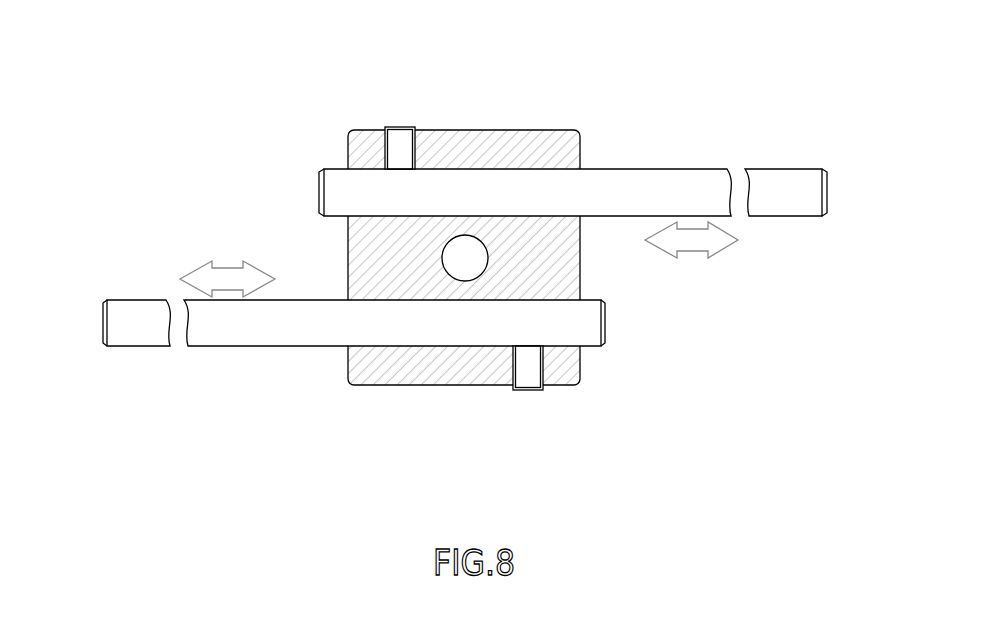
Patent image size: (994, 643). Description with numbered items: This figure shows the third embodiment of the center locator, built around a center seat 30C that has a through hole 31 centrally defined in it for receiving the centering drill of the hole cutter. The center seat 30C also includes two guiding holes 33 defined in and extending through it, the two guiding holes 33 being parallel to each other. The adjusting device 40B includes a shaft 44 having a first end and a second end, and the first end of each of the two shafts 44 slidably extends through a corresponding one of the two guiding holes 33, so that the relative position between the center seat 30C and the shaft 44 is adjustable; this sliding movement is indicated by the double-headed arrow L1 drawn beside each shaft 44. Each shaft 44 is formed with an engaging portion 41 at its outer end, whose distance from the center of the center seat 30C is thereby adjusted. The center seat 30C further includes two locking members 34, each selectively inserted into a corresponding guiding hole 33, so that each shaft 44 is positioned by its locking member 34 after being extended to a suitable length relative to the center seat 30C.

The center seat 30C is at (540, 130).
The through hole 31 is at (457, 258).
The guiding holes 33 is at (493, 168).
The locking members 34 is at (400, 138).
The adjusting device 40B is at (475, 264).
The engaging portion 41 is at (95, 330).
The shaft 44 is at (640, 169).
The sliding direction L1 is at (203, 265).